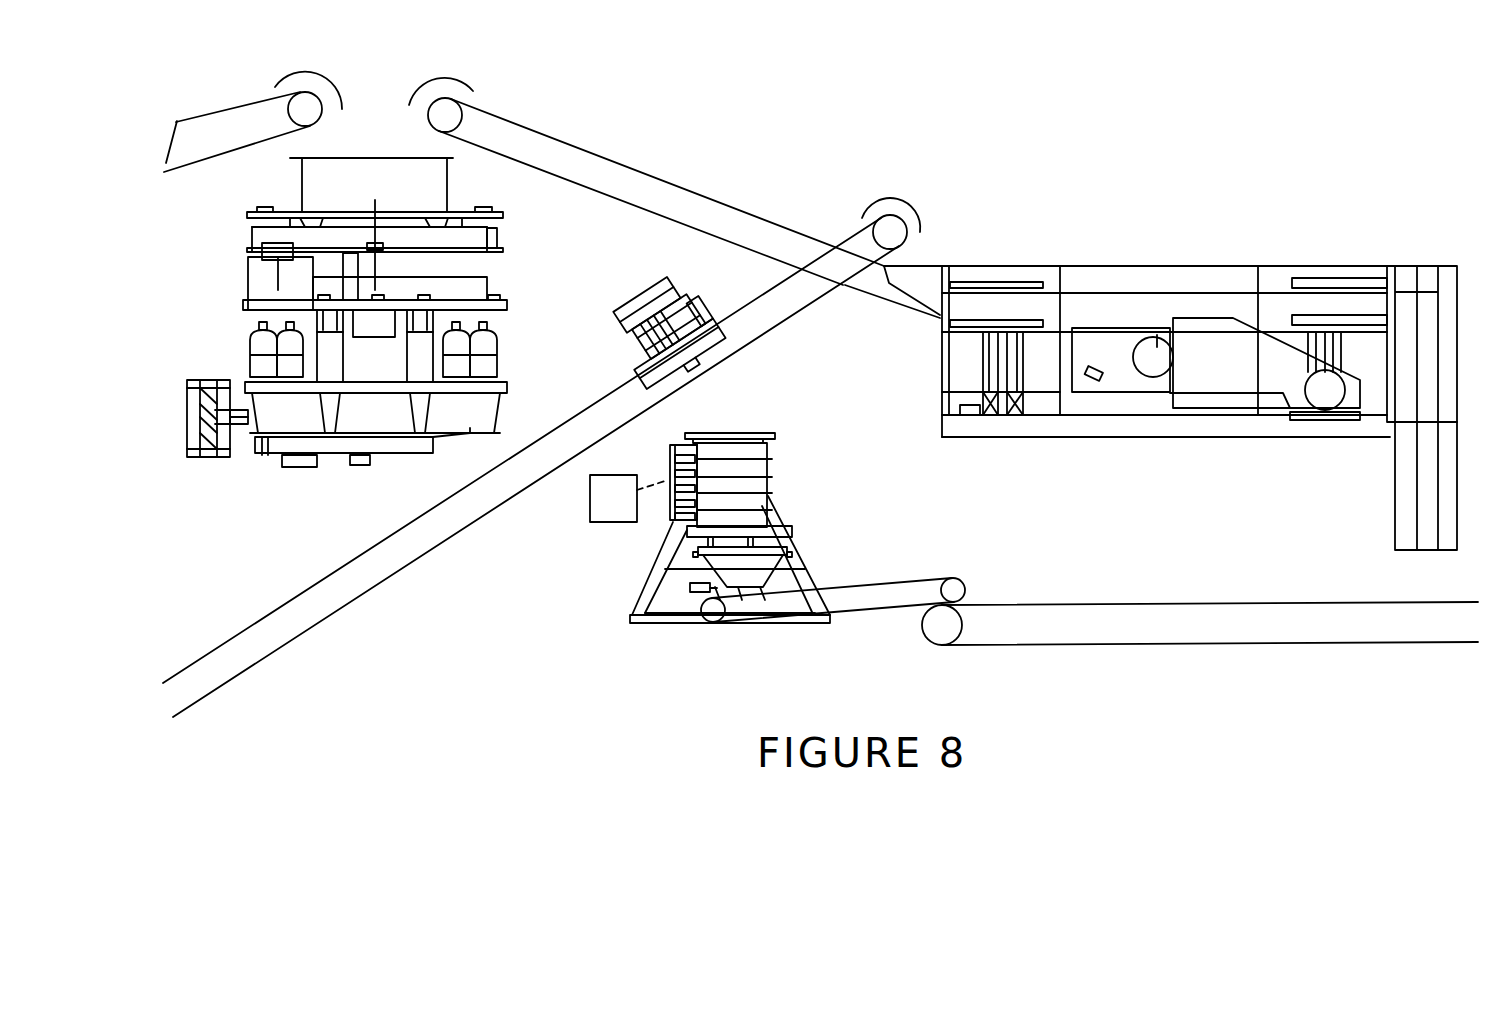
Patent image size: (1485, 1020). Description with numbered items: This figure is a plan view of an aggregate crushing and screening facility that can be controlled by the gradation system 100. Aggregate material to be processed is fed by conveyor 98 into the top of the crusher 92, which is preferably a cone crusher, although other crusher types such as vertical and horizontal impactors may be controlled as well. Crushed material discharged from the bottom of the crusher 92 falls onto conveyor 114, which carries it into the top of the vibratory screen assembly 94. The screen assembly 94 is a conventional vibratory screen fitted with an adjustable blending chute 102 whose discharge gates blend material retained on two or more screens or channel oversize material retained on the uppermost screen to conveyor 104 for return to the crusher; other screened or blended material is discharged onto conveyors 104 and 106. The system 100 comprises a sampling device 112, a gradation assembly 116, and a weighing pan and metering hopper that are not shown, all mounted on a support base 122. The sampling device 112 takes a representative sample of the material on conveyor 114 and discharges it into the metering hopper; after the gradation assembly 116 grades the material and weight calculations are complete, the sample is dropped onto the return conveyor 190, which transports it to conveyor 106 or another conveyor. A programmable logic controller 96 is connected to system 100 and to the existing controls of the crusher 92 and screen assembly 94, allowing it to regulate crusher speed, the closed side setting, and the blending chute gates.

The crusher 92 is at (241, 262).
The vibratory screen assembly 94 is at (1175, 252).
The programmable logic controller 96 is at (586, 508).
The conveyor 98 is at (274, 115).
The system 100 is at (631, 319).
The adjustable blending chute 102 is at (1443, 252).
The conveyor 104 is at (632, 178).
The conveyor 106 is at (1143, 618).
The sampling device 112 is at (619, 281).
The conveyor 114 is at (777, 310).
The gradation assembly 116 is at (811, 451).
The support base 122 is at (637, 598).
The return conveyor 190 is at (897, 592).